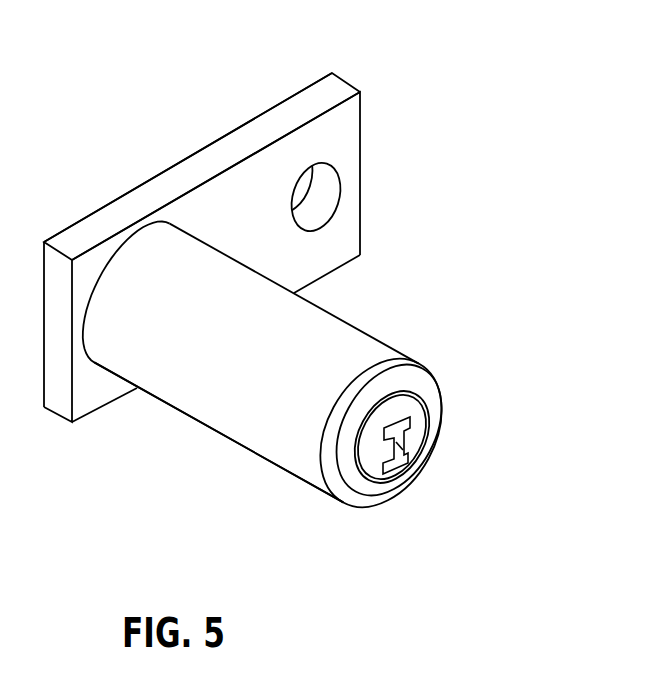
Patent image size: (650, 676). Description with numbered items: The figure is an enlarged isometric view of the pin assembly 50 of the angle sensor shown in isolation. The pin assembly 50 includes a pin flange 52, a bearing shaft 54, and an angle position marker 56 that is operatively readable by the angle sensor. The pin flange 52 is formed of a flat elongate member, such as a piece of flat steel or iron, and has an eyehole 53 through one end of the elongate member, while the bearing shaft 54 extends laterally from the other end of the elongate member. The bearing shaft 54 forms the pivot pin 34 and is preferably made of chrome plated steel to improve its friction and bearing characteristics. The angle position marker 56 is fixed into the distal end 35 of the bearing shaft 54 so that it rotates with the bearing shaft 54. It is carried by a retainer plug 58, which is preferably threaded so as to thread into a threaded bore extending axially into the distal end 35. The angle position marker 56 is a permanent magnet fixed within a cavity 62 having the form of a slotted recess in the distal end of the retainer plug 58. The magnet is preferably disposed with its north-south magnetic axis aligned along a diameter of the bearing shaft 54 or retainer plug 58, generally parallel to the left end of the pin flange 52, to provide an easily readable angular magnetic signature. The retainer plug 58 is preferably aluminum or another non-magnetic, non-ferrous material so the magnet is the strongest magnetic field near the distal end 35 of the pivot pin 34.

The pin assembly 50 is at (248, 101).
The pin flange 52 is at (197, 162).
The eyehole 53 is at (336, 183).
The pivot pin 34 is at (390, 325).
The bearing shaft 54 is at (198, 420).
The retainer plug 58 is at (357, 502).
The distal end 35 is at (377, 508).
The cavity 62 is at (410, 420).
The angle position marker 56 is at (397, 436).